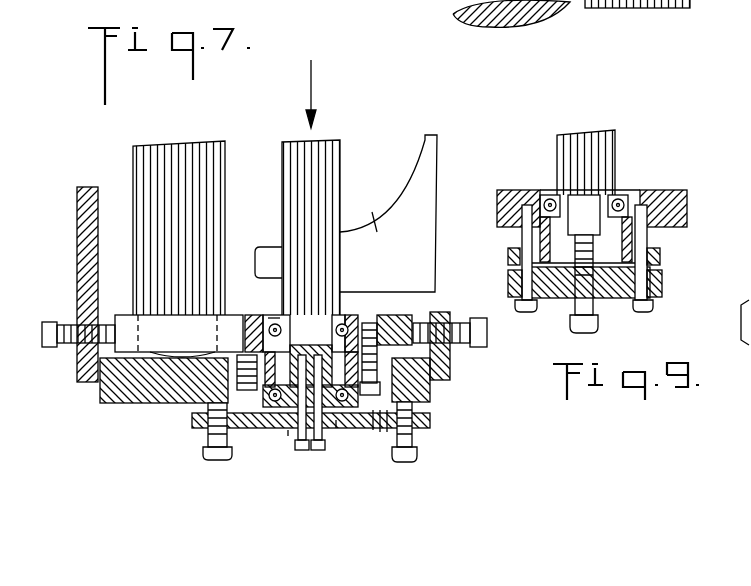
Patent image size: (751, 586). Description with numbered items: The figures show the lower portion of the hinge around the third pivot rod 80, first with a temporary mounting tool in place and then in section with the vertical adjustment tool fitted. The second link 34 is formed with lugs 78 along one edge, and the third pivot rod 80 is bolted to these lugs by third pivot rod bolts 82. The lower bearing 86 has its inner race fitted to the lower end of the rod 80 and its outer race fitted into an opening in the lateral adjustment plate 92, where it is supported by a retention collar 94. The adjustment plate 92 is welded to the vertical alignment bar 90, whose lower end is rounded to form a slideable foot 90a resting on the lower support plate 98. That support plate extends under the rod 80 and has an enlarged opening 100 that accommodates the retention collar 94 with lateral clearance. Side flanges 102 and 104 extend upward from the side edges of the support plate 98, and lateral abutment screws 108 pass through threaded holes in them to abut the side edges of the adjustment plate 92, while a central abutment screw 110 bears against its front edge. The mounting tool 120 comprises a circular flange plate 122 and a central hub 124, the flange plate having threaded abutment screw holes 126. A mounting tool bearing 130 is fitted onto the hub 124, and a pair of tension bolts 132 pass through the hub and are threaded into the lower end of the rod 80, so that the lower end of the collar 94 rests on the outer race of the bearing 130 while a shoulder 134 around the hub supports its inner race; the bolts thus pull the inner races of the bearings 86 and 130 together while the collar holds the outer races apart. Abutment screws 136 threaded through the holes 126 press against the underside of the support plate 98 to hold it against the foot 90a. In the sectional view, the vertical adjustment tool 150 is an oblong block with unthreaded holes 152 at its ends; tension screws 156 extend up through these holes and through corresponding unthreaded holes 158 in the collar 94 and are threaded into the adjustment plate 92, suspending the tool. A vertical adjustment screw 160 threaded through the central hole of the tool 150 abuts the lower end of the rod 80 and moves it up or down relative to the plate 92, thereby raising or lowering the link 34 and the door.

In FIG. 7, the second link 34 is at (420, 156).
In FIG. 7, the lugs 78 is at (371, 206).
In FIG. 7, the third pivot rod 80 is at (290, 184).
In FIG. 7, the third pivot rod bolts 82 is at (265, 247).
In FIG. 7, the lower bearing 86 is at (272, 320).
In FIG. 7, the vertical alignment bar 90 is at (142, 162).
In FIG. 7, the slideable foot 90a is at (177, 358).
In FIG. 7, the lateral adjustment plate 92 is at (122, 315).
In FIG. 9, the lateral adjustment plate 92 is at (660, 190).
In FIG. 7, the retention collar 94 is at (248, 392).
In FIG. 7, the lower support plate 98 is at (120, 404).
In FIG. 7, the enlarged opening 100 is at (380, 432).
In FIG. 7, the side flange 102 is at (77, 258).
In FIG. 9, the side flange 102 is at (746, 348).
In FIG. 7, the side flange 104 is at (451, 376).
In FIG. 7, the lateral abutment screws 108 is at (47, 322).
In FIG. 7, the central abutment screw 110 is at (387, 432).
In FIG. 7, the mounting tool 120 is at (428, 424).
In FIG. 7, the circular flange plate 122 is at (373, 430).
In FIG. 7, the central hub 124 is at (288, 434).
In FIG. 7, the threaded abutment screw holes 126 is at (205, 420).
In FIG. 7, the mounting tool bearing 130 is at (300, 318).
In FIG. 7, the tension bolts 132 is at (319, 452).
In FIG. 7, the shoulder 134 is at (336, 428).
In FIG. 7, the abutment screws 136 is at (220, 462).
In FIG. 9, the vertical adjustment tool 150 is at (618, 300).
In FIG. 9, the unthreaded holes 152 is at (508, 284).
In FIG. 9, the tension screws 156 is at (515, 306).
In FIG. 9, the unthreaded holes 158 is at (508, 256).
In FIG. 9, the vertical adjustment screw 160 is at (572, 333).